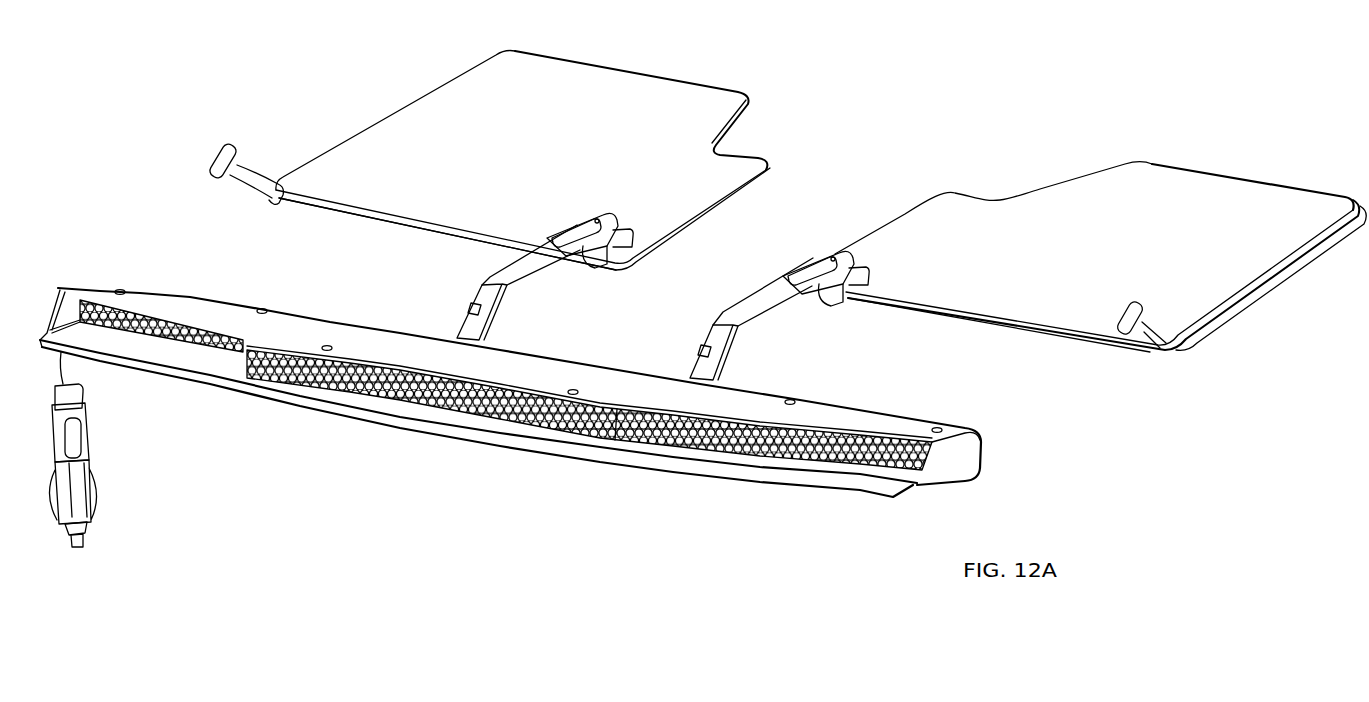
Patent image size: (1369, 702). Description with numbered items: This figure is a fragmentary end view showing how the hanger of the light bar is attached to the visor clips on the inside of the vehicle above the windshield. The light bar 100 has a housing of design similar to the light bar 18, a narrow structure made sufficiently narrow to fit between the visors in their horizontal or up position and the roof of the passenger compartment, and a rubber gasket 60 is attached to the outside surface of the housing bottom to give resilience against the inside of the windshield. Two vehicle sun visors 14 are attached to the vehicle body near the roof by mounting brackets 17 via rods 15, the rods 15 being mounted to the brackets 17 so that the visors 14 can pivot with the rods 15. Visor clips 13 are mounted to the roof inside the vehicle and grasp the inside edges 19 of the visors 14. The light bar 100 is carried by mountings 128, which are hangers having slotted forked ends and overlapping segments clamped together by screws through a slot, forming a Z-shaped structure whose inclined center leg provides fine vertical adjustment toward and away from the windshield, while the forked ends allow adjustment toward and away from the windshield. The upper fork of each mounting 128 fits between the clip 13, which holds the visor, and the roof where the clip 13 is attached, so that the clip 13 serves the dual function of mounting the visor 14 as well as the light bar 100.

The light bar 100 is at (745, 398).
The light bar 18 is at (912, 416).
The rubber gasket 60 is at (905, 490).
The mountings 128 is at (688, 347).
The visor clips 13 is at (827, 260).
The vehicle sun visors 14 is at (445, 125).
The inside edges 19 is at (404, 232).
The rods 15 is at (252, 170).
The mounting brackets 17 is at (224, 160).